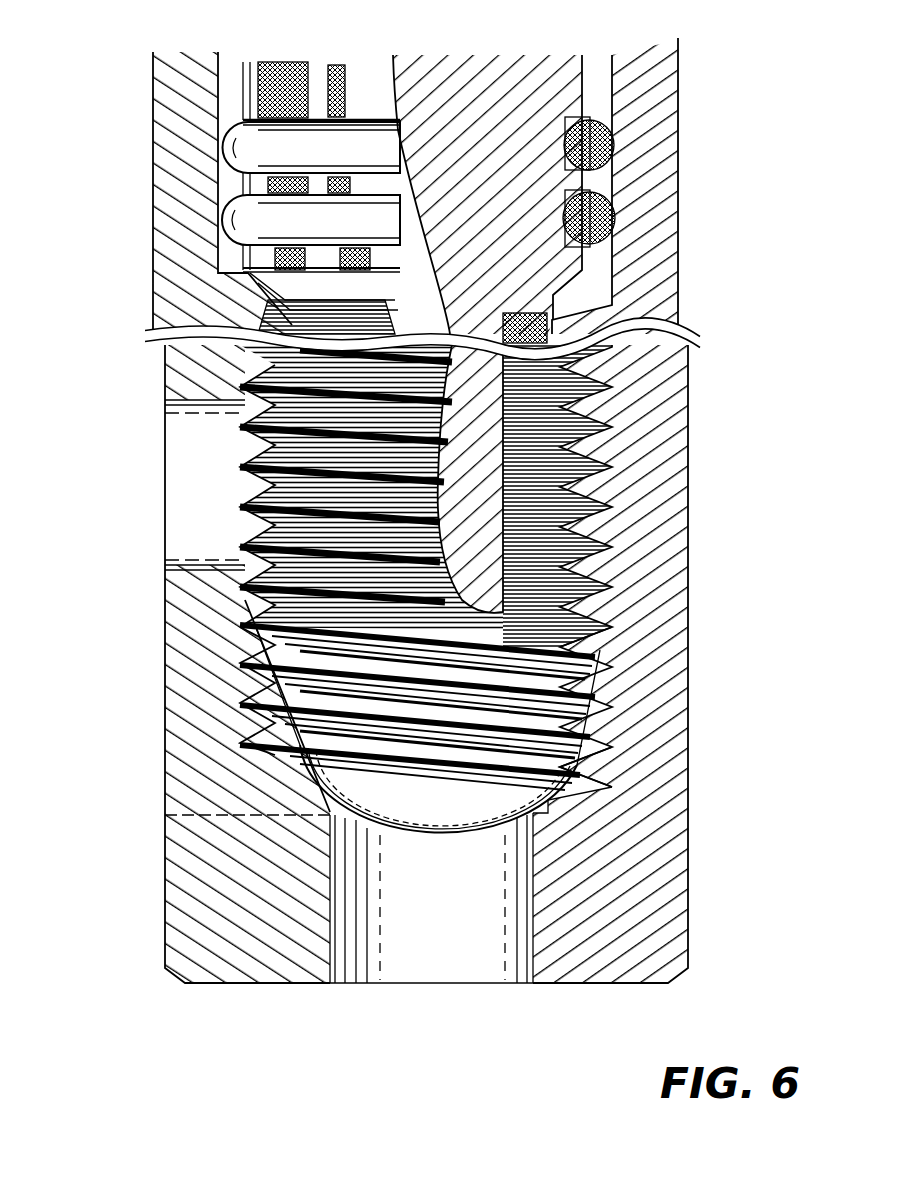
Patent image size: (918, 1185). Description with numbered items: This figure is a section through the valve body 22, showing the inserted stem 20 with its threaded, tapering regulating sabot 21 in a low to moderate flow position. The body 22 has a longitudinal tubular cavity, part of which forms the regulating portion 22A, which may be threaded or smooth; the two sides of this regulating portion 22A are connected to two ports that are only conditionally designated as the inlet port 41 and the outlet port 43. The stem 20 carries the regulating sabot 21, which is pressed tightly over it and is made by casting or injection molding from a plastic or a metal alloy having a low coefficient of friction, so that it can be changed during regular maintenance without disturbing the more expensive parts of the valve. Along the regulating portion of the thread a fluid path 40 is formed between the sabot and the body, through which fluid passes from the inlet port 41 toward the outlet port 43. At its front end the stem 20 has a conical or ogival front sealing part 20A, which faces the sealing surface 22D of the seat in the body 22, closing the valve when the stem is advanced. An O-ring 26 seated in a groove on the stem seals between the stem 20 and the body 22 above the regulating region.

The stem 20 is at (425, 70).
The conical/ogival front sealing part of the stem 20A is at (410, 793).
The regulating sabot 21 is at (655, 487).
The body of the valve 22 is at (658, 290).
The regulating portion of the body 22A is at (155, 817).
The sealing surface of the seat in the body or the insert 22D is at (540, 803).
The O-ring 26 is at (605, 120).
The fluid path 40 is at (582, 768).
The inlet port 41 is at (443, 958).
The outlet port 43 is at (202, 460).